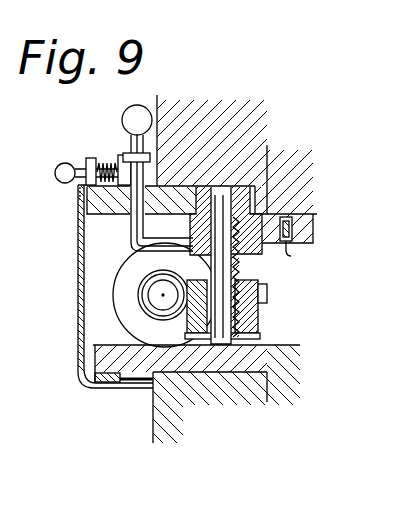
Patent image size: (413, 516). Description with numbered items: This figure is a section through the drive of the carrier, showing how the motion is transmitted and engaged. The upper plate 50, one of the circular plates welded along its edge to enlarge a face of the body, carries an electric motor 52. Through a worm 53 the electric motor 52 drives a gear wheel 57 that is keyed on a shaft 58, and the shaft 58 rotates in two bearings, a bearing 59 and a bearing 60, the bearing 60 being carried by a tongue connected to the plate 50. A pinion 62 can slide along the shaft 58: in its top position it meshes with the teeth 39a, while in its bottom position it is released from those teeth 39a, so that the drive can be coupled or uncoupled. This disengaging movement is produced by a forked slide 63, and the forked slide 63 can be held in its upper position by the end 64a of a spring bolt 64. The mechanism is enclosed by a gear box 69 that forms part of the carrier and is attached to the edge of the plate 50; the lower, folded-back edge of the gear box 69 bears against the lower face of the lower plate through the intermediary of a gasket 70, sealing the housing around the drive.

The teeth 39a is at (290, 245).
The upper plate 50 is at (185, 188).
The electric motor 52 is at (130, 278).
The worm 53 is at (138, 298).
The gear wheel 57 is at (200, 346).
The shaft 58 is at (231, 346).
The bearing 59 is at (273, 189).
The bearing 60 is at (260, 318).
The pinion 62 is at (128, 228).
The forked slide 63 is at (163, 183).
The spring bolt 64 is at (78, 178).
The end of spring bolt 64a is at (125, 163).
The gear box 69 is at (78, 342).
The gasket 70 is at (115, 387).